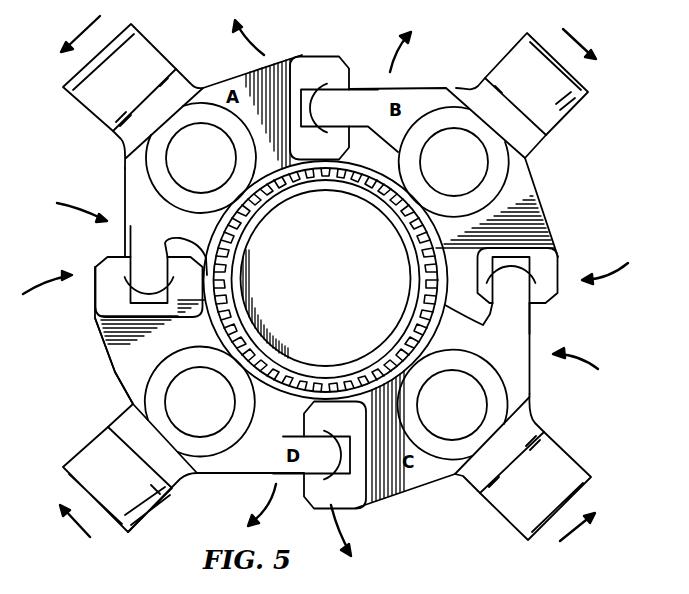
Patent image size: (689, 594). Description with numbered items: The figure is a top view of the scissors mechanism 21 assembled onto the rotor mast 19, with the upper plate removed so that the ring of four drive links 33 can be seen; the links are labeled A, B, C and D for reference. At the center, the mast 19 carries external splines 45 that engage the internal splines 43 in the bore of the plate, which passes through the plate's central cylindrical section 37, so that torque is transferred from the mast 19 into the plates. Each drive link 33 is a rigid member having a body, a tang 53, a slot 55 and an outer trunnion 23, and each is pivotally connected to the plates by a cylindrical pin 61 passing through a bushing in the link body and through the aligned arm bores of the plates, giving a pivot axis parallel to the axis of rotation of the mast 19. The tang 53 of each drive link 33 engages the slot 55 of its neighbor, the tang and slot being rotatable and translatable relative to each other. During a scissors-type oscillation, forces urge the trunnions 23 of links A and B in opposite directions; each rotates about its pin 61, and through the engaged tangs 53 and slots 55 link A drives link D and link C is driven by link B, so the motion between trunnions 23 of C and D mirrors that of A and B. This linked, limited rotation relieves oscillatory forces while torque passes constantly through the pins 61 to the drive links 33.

The rotor mast 19 is at (326, 278).
The mechanism 21 is at (617, 199).
The trunnion 23 is at (503, 521).
The drive link 33 is at (116, 372).
The central cylindrical section 37 is at (477, 324).
The internal splines 43 is at (400, 218).
The external splines 45 is at (178, 238).
The tang 53 is at (113, 262).
The slot 55 is at (105, 301).
The cylindrical pin 61 is at (228, 432).